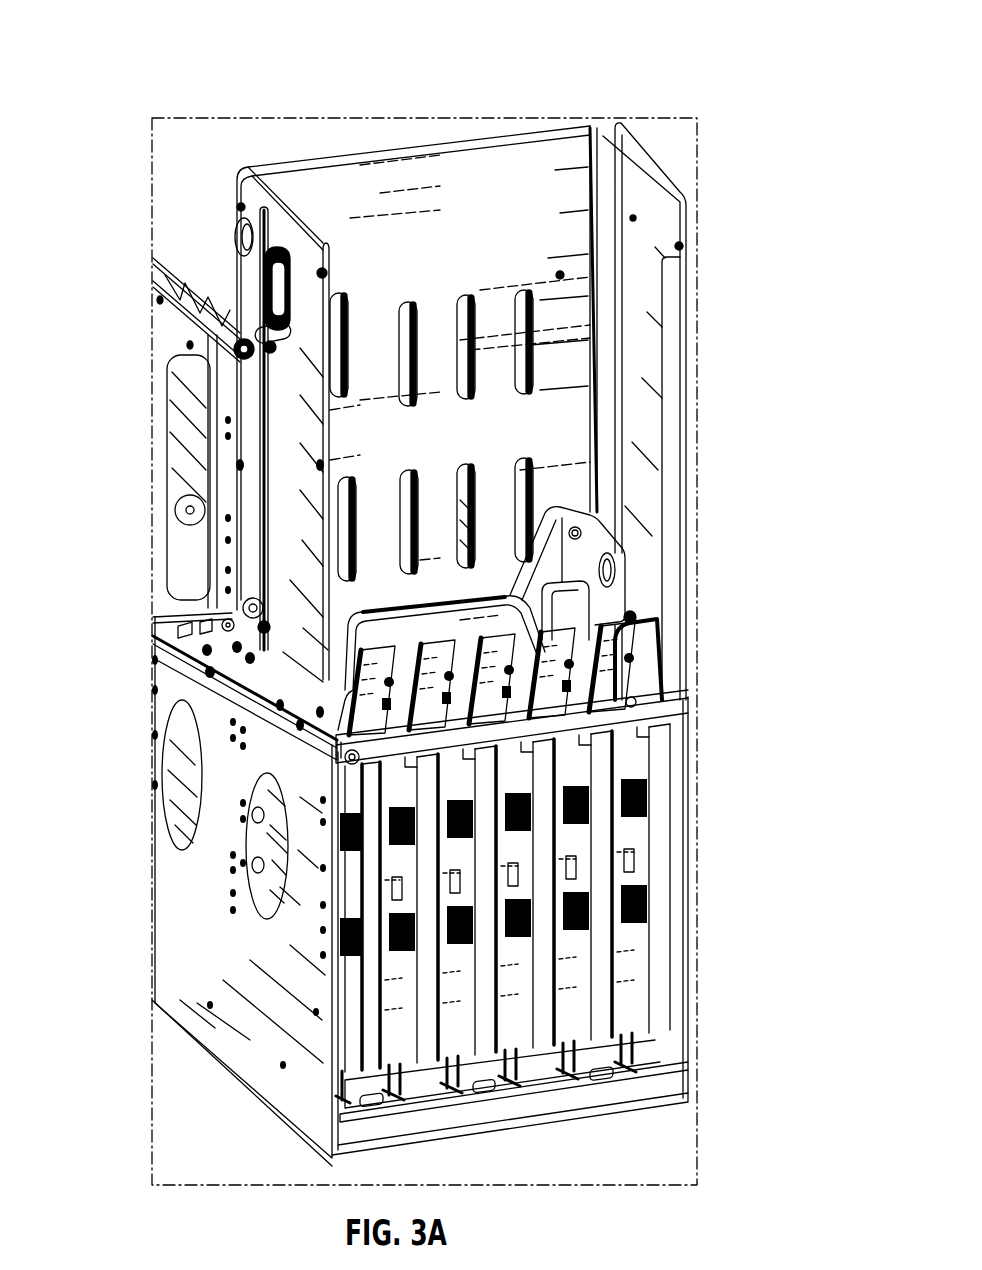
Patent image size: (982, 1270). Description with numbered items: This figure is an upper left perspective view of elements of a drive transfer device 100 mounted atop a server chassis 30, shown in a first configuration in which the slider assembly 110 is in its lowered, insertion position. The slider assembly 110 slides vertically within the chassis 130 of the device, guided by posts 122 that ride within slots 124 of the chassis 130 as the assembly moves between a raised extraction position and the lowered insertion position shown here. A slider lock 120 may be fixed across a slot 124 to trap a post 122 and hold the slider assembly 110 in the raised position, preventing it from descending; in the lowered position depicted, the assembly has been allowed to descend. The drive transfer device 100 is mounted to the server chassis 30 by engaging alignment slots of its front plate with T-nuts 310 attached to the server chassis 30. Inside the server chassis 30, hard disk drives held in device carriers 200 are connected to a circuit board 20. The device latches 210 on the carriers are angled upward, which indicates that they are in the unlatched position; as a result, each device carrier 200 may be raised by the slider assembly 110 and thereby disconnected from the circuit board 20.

The drive transfer device 100 is at (742, 52).
The chassis 130 is at (416, 184).
The slots 124 is at (620, 152).
The slider lock 120 is at (272, 325).
The posts 122 is at (250, 605).
The slider assembly 110 is at (483, 598).
The device latches 210 is at (628, 652).
The T-nuts 310 is at (552, 686).
The device carriers 200 is at (632, 957).
The server chassis 30 is at (267, 1042).
The circuit board 20 is at (503, 1097).